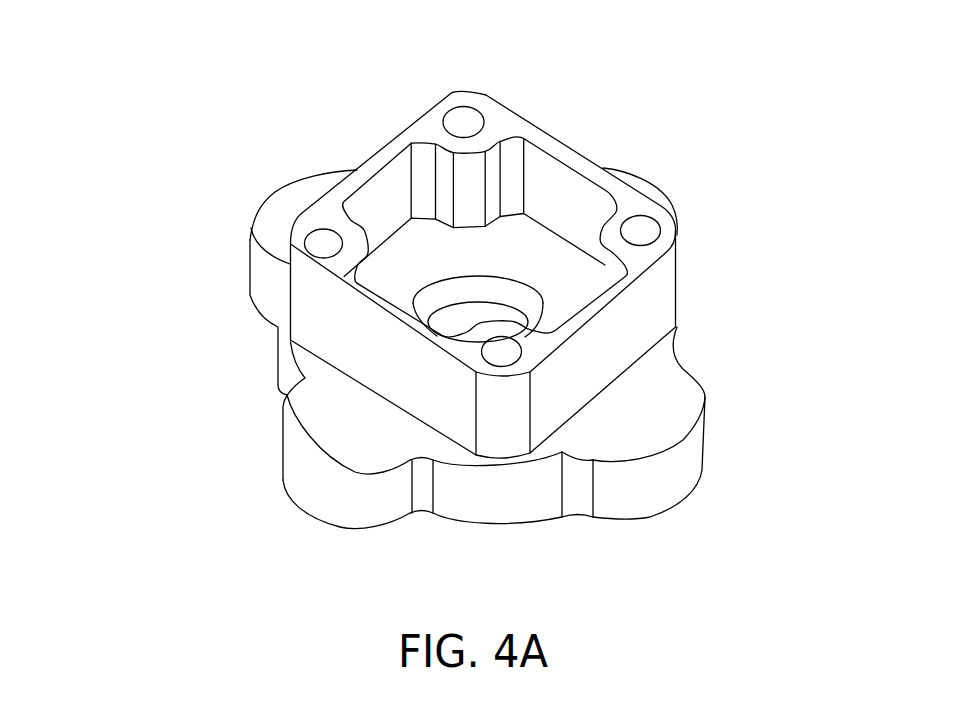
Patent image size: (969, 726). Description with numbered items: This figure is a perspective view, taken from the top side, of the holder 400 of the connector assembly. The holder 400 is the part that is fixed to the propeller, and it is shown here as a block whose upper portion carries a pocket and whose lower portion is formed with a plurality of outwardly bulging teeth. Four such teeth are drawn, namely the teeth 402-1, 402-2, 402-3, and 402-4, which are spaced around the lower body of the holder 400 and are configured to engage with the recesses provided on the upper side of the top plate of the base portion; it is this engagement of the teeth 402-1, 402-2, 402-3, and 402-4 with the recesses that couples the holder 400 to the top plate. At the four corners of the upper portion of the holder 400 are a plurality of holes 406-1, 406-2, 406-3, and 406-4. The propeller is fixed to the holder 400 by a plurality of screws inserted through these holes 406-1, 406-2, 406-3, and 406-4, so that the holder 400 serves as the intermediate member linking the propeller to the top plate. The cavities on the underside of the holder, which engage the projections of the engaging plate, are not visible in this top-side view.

The holder 400 is at (194, 36).
The tooth 402-1 is at (607, 428).
The tooth 402-2 is at (640, 190).
The tooth 402-3 is at (290, 218).
The tooth 402-4 is at (330, 438).
The hole 406-1 is at (640, 230).
The hole 406-2 is at (468, 121).
The hole 406-3 is at (317, 247).
The hole 406-4 is at (500, 349).